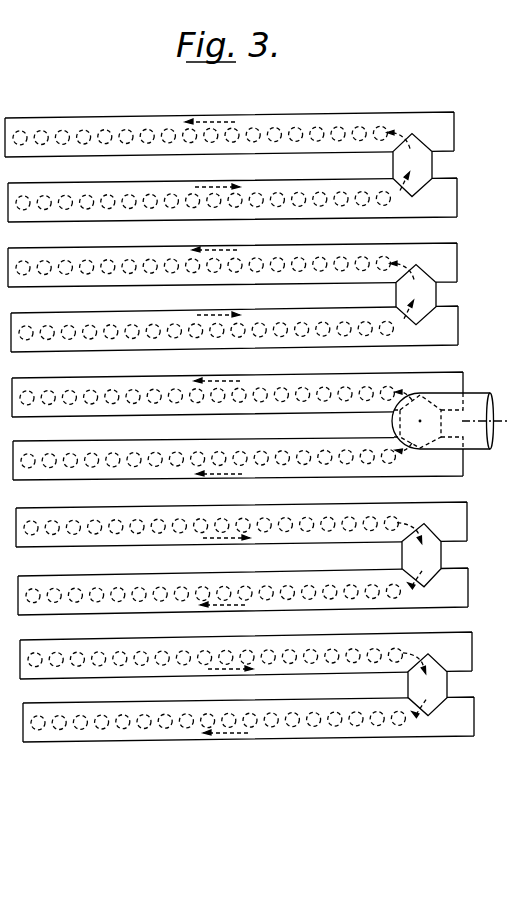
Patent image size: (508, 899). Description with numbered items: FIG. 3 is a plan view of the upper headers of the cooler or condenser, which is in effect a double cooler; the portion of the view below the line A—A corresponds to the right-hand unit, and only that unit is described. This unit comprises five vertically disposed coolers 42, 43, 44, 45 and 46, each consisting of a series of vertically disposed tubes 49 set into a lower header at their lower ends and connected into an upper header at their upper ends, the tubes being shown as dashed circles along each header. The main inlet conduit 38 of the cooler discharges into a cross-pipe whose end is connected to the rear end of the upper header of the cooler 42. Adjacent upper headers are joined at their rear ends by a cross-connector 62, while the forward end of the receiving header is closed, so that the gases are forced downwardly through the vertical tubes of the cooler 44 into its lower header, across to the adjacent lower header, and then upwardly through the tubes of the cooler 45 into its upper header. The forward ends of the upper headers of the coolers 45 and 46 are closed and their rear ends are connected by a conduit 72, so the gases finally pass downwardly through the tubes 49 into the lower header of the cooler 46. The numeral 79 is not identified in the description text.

The main inlet conduit 38 is at (450, 406).
The cooler 42 is at (455, 467).
The cooler 43 is at (459, 510).
The cooler 44 is at (462, 579).
The cooler 45 is at (462, 641).
The cooler 46 is at (465, 704).
The vertically disposed tubes 49 is at (357, 126).
The cross-connector 62 is at (437, 551).
The conduit 72 is at (442, 680).
The drive 79 is at (494, 768).
The line A— A is at (502, 421).